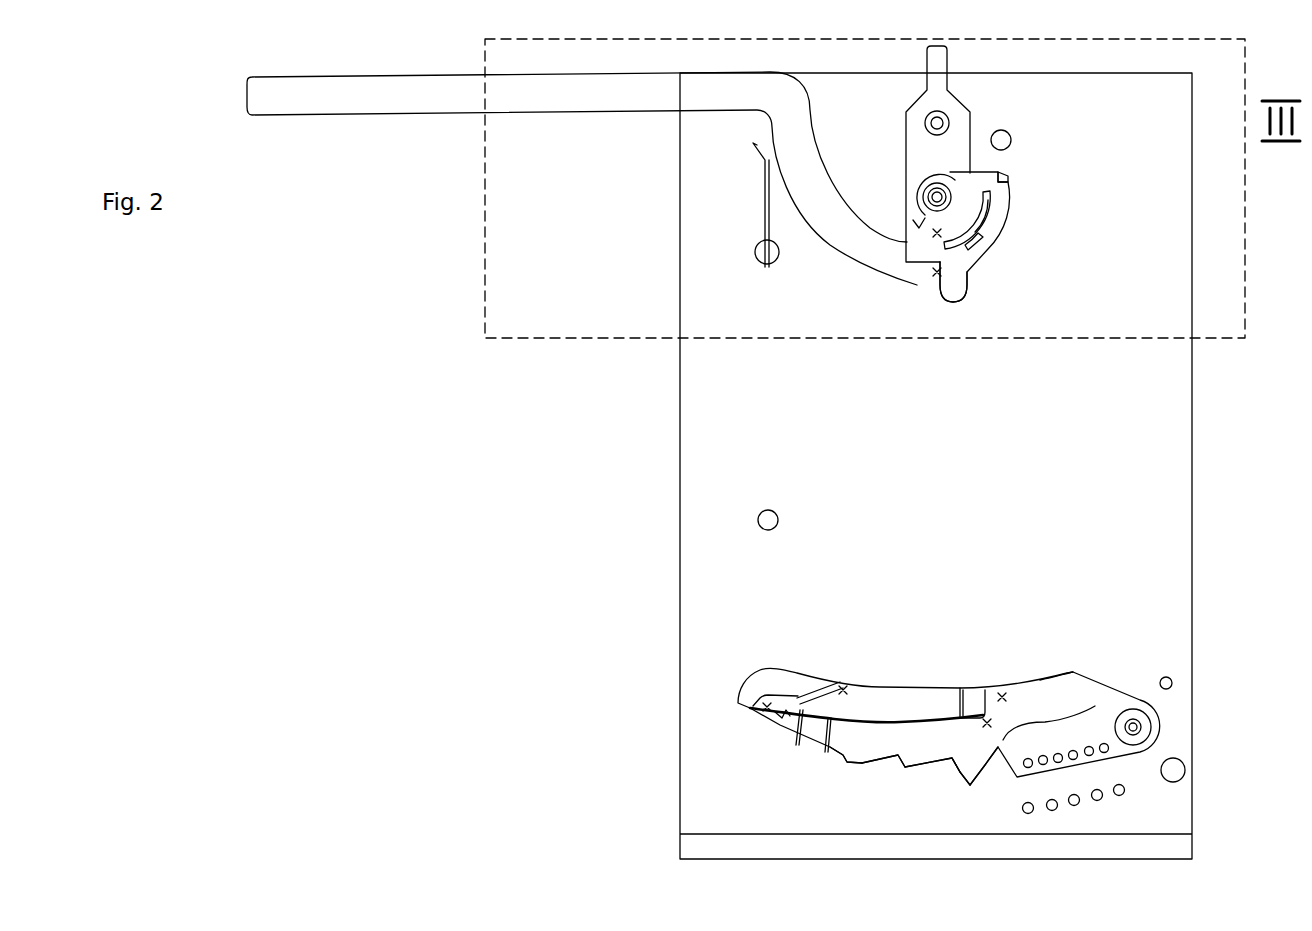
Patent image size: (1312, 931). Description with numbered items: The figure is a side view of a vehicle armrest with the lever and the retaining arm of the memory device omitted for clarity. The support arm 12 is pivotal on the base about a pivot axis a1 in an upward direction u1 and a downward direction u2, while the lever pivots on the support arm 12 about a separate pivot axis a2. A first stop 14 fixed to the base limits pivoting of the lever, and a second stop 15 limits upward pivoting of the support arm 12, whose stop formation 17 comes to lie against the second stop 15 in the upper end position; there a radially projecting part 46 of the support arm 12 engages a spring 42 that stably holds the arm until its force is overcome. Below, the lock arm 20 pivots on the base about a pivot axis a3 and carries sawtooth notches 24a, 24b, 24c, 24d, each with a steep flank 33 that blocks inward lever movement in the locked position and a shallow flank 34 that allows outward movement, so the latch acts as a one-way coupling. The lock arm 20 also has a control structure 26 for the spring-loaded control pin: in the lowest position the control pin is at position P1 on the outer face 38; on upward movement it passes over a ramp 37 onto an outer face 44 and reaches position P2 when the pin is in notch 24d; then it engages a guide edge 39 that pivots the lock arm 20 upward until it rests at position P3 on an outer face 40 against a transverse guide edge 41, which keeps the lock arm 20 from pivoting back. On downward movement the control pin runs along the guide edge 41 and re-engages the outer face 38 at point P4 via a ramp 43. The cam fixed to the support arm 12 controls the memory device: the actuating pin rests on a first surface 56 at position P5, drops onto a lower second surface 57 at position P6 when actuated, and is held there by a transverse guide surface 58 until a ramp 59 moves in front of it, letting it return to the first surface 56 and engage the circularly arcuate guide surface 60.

The support arm 12 is at (392, 102).
The first stop 14 is at (768, 520).
The second stop 15 is at (1001, 140).
The stop formation 17 is at (943, 67).
The lock arm 20 is at (1107, 688).
The notch 24a is at (1000, 768).
The notch 24b is at (945, 766).
The notch 24c is at (895, 760).
The notch 24d is at (837, 758).
The control structure 26 is at (935, 714).
The steep flank 33 is at (1002, 742).
The shallow flank 34 is at (955, 772).
The ramp 37 is at (978, 686).
The outer face 38 is at (1065, 693).
The guide edge 39 is at (840, 693).
The outer face 40 is at (770, 713).
The guide edge 41 is at (887, 722).
The spring 42 is at (767, 222).
The ramp 43 is at (812, 727).
The outer face 44 is at (912, 710).
The radially projecting part 46 is at (956, 306).
The first surface 56 is at (920, 224).
The second surface 57 is at (1008, 178).
The guide surface 58 is at (1000, 218).
The ramp 59 is at (982, 262).
The circularly arcuate guide surface 60 is at (989, 230).
The pivot axis a1 is at (937, 123).
The pivot axis a2 is at (937, 197).
The pivot axis a3 is at (1133, 727).
The position P1 is at (1007, 685).
The position P2 is at (849, 681).
The position P3 is at (755, 707).
The point P4 is at (996, 720).
The position P5 is at (927, 238).
The position P6 is at (933, 282).
The upward direction u1 is at (727, 63).
The downward direction u2 is at (720, 125).